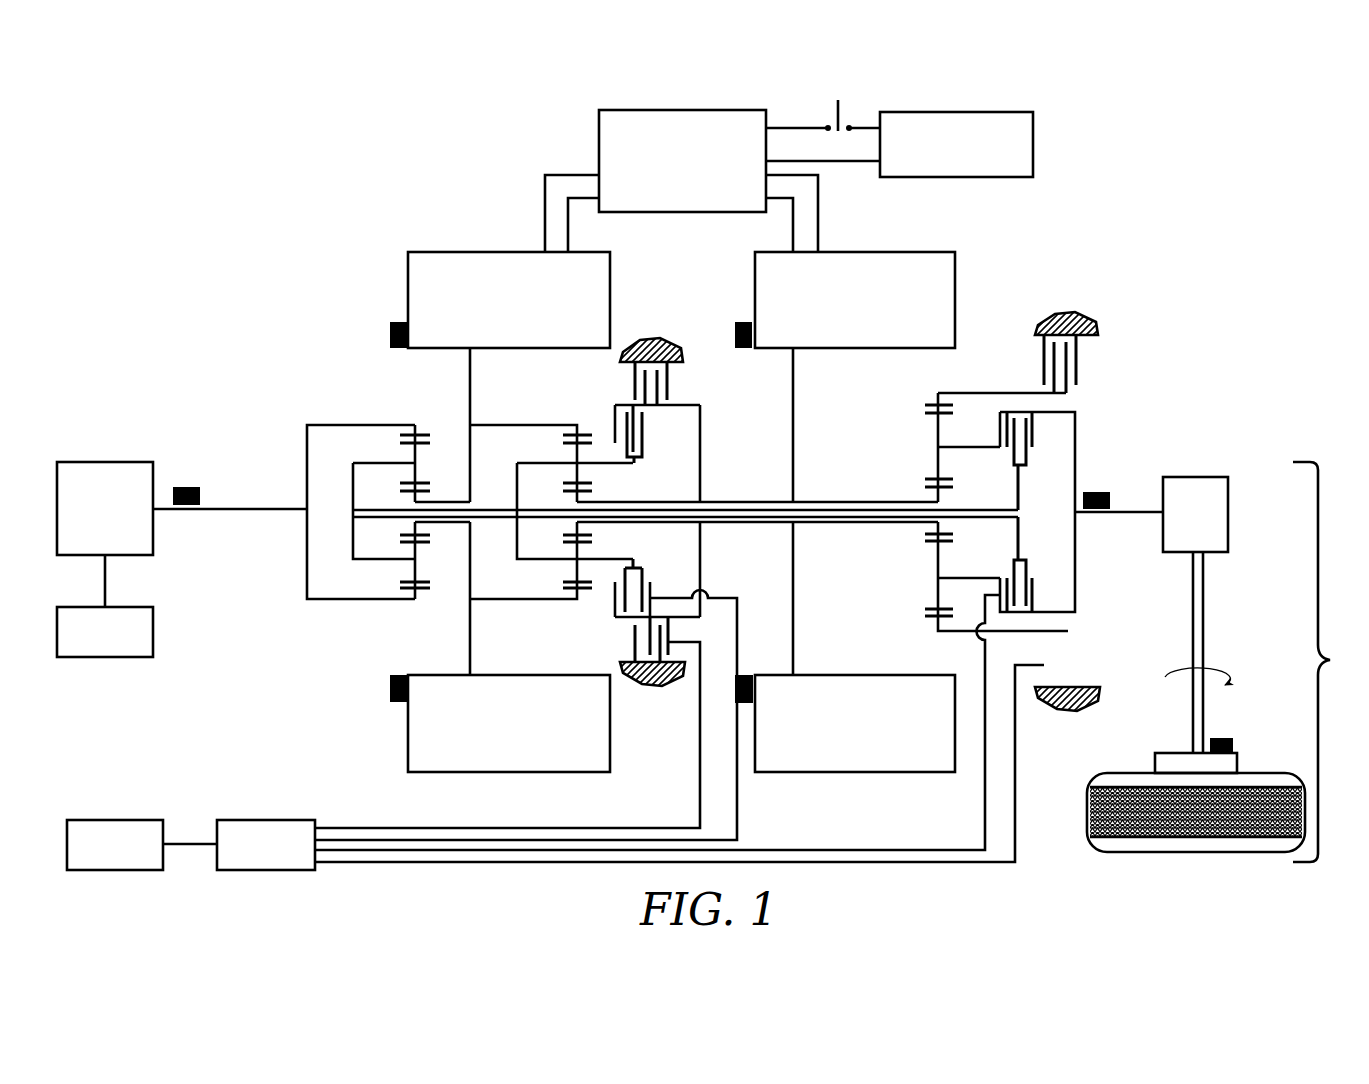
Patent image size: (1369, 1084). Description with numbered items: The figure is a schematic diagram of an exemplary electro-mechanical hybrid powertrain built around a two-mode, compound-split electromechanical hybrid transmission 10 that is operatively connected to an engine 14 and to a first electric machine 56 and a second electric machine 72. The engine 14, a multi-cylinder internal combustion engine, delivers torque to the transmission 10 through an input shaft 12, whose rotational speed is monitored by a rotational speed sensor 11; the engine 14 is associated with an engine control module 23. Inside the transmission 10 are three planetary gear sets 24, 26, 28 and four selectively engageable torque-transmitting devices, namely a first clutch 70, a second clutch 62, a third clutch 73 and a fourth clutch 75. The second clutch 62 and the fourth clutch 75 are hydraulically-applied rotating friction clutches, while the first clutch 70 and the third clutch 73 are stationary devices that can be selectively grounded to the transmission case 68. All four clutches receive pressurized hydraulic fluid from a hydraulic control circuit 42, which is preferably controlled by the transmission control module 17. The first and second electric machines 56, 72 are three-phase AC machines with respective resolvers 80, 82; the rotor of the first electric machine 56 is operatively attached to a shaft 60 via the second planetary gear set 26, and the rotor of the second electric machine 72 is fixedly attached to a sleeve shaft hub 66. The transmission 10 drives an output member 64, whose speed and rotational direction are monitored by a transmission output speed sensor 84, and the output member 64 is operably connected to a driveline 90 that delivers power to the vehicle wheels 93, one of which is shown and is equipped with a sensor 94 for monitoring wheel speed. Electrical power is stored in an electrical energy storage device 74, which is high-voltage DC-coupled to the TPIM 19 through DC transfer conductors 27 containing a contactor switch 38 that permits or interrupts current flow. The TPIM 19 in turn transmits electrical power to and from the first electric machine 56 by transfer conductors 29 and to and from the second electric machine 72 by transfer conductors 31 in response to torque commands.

The transmission 10 is at (368, 212).
The rotational speed sensor 11 is at (185, 487).
The input shaft 12 is at (266, 507).
The engine 14 is at (110, 462).
The transmission control module 17 is at (105, 820).
The TPIM 19 is at (599, 125).
The engine control module 23 is at (150, 652).
The planetary gear set 24 is at (405, 420).
The second planetary gear set 26 is at (575, 420).
The DC transfer conductors 27 is at (790, 128).
The planetary gear set 28 is at (935, 390).
The transfer conductors 29 is at (545, 205).
The transfer conductors 31 is at (818, 208).
The contactor switch 38 is at (843, 107).
The hydraulic control circuit 42 is at (232, 820).
The first electric machine 56 is at (408, 283).
The shaft 60 is at (992, 512).
The clutch C2 62 is at (1065, 507).
The output member 64 is at (1133, 505).
The sleeve shaft hub 66 is at (832, 502).
The transmission case 68 is at (650, 345).
The clutch C1 70 is at (1030, 355).
The second electric machine 72 is at (955, 270).
The clutch C3 73 is at (672, 385).
The electrical energy storage device 74 is at (1033, 133).
The clutch C4 75 is at (650, 435).
The resolver 80 is at (390, 335).
The resolver 82 is at (745, 322).
The transmission output speed sensor 84 is at (1098, 492).
The driveline 90 is at (1328, 657).
The vehicle wheels 93 is at (1155, 762).
The sensor 94 is at (1225, 738).